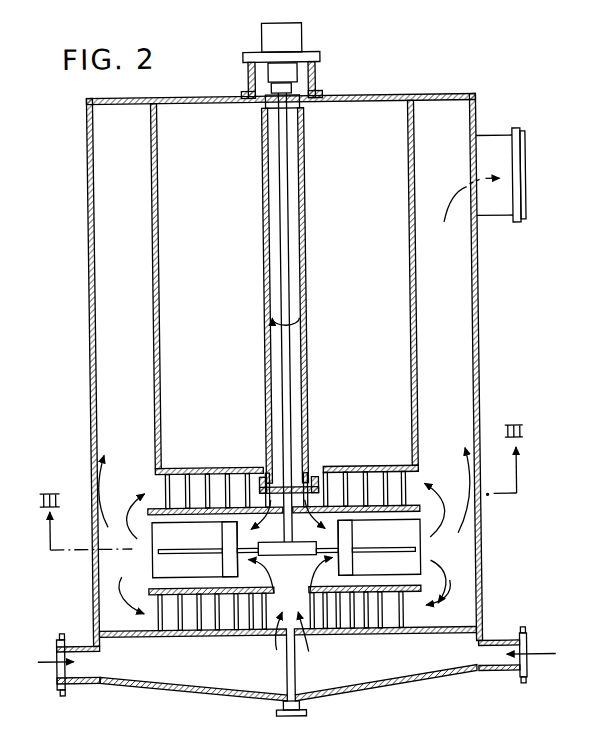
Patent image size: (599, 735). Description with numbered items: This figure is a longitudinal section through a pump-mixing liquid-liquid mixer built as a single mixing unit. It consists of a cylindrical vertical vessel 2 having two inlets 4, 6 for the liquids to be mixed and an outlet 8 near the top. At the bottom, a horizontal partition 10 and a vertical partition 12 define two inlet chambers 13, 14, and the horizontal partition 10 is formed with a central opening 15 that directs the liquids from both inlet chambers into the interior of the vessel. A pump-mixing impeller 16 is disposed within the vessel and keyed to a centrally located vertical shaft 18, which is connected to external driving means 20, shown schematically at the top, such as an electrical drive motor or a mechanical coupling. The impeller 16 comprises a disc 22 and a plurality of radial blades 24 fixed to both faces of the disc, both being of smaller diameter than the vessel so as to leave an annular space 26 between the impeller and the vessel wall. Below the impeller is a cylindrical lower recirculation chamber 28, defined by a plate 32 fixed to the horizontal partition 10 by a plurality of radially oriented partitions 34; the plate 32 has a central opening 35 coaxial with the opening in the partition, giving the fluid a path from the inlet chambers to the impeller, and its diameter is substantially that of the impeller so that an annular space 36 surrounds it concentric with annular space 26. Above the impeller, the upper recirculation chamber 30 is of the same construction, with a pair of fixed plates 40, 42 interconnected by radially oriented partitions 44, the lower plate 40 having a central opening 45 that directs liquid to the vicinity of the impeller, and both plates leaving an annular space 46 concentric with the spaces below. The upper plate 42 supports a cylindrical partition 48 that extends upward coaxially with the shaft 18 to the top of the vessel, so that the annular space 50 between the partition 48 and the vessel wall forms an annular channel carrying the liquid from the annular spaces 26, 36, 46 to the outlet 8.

The cylindrical vertical vessel 2 is at (481, 276).
The inlet 4 is at (85, 644).
The inlet 6 is at (492, 641).
The outlet 8 is at (503, 144).
The horizontal partition 10 is at (424, 636).
The vertical partition 12 is at (292, 672).
The inlet chamber 13 is at (182, 666).
The inlet chamber 14 is at (388, 669).
The central opening 15 is at (263, 634).
The pump-mixing impeller 16 is at (139, 555).
The vertical shaft 18 is at (283, 157).
The external driving means 20 is at (300, 73).
The disc 22 is at (192, 546).
The radial blades 24 is at (125, 522).
The annular space 26 is at (468, 564).
The lower recirculation chamber 28 is at (150, 626).
The upper recirculation chamber 30 is at (134, 480).
The plate 32 is at (319, 597).
The radially oriented partitions 34 is at (233, 603).
The central opening 35 is at (291, 586).
The annular space 36 is at (465, 628).
The lower plate 40 is at (341, 470).
The upper plate 42 is at (226, 470).
The radially oriented partitions 44 is at (190, 483).
The central opening 45 is at (341, 531).
The annular space 46 is at (461, 476).
The cylindrical partition 48 is at (158, 150).
The annular space 50 is at (129, 170).